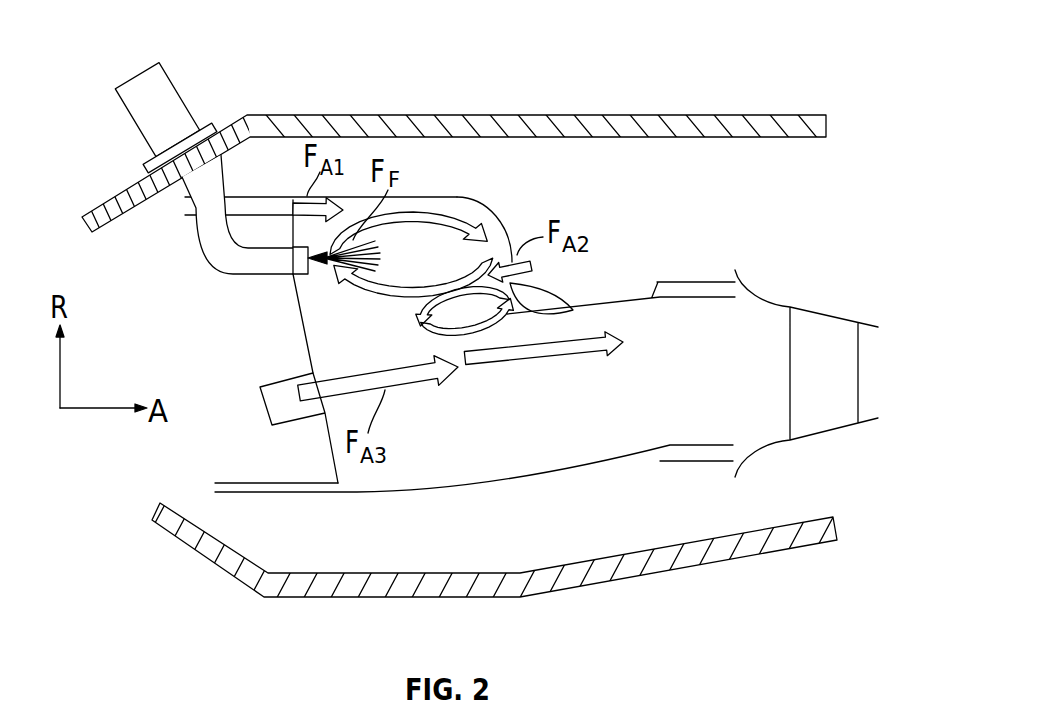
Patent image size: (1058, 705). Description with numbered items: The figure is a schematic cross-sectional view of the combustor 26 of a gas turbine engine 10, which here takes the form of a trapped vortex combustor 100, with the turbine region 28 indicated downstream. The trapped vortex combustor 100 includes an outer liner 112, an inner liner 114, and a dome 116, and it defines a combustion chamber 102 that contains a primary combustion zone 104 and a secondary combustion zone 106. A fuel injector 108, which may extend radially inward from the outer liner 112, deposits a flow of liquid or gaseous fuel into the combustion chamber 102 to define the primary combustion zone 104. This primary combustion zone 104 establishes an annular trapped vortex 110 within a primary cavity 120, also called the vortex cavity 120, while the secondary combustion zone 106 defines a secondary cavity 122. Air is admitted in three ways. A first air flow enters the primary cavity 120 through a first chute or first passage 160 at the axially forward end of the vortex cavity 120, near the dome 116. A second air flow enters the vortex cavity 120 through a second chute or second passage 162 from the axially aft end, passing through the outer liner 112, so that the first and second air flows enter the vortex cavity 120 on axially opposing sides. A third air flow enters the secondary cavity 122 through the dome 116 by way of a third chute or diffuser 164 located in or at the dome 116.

The gas turbine engine 10 is at (118, 40).
The combustor 26 is at (541, 197).
The turbine section 28 is at (845, 297).
The trapped vortex combustor 100 is at (628, 188).
The combustion chamber 102 is at (561, 287).
The primary combustion zone 104 is at (480, 225).
The secondary combustion zone 106 is at (502, 451).
The fuel injector 108 is at (197, 218).
The annular trapped vortex 110 is at (420, 211).
The outer liner 112 is at (651, 297).
The inner liner 114 is at (556, 468).
The dome 116 is at (297, 316).
The primary cavity 120 is at (384, 343).
The secondary cavity 122 is at (456, 426).
The first passage 160 is at (258, 197).
The second passage 162 is at (513, 283).
The diffuser 164 is at (293, 424).